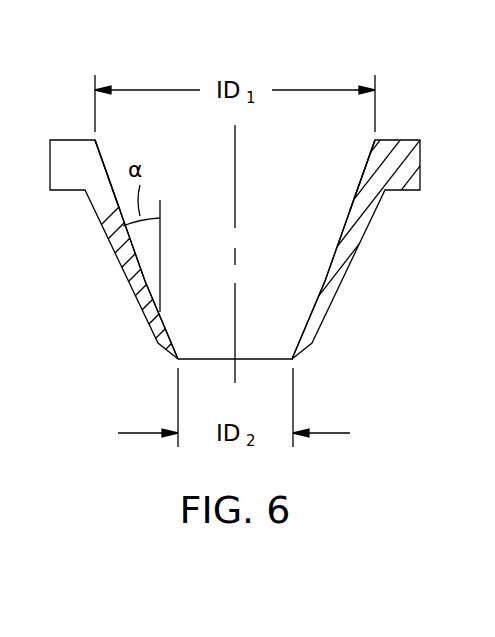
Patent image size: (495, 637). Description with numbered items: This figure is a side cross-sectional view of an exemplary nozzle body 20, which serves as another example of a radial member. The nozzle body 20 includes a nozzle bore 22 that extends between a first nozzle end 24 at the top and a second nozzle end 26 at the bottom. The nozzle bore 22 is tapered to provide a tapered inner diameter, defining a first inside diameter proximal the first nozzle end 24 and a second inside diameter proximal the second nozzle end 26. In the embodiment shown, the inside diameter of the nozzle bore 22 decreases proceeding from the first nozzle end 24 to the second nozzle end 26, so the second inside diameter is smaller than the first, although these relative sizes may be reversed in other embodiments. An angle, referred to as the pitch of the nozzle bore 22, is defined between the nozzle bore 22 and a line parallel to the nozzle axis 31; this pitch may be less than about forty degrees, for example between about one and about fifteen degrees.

The nozzle body 20 is at (313, 317).
The nozzle bore 22 is at (348, 213).
The first nozzle end 24 is at (372, 148).
The second nozzle end 26 is at (293, 360).
The nozzle axis 31 is at (236, 252).